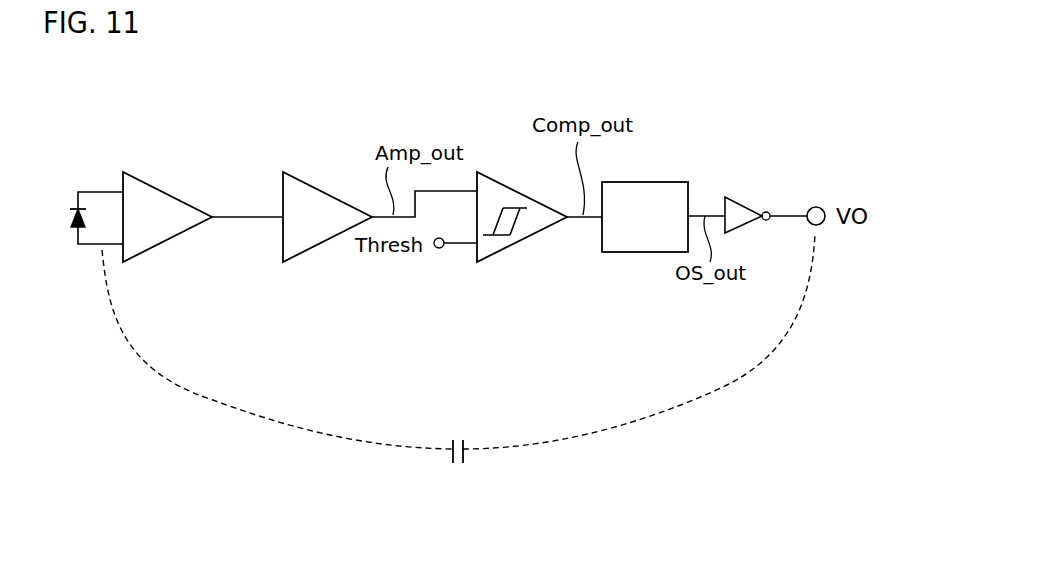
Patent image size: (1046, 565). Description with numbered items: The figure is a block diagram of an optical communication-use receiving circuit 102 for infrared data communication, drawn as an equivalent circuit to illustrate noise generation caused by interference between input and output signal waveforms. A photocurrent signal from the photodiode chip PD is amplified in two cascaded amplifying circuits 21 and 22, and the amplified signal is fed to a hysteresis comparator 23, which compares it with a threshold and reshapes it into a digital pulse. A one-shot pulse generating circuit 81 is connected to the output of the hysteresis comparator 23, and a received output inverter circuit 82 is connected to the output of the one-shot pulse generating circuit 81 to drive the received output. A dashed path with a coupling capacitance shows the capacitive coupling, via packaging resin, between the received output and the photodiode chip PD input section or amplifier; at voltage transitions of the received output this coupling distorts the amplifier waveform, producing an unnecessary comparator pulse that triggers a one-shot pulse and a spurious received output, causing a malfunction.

The amplifying circuit 21 is at (150, 180).
The amplifying circuit 22 is at (310, 178).
The hysteresis comparator 23 is at (500, 180).
The one-shot pulse generating circuit 81 is at (623, 182).
The received output inverter circuit 82 is at (743, 197).
The optical communication-use receiving circuit 102 is at (718, 122).
The photodiode chip PD is at (77, 235).